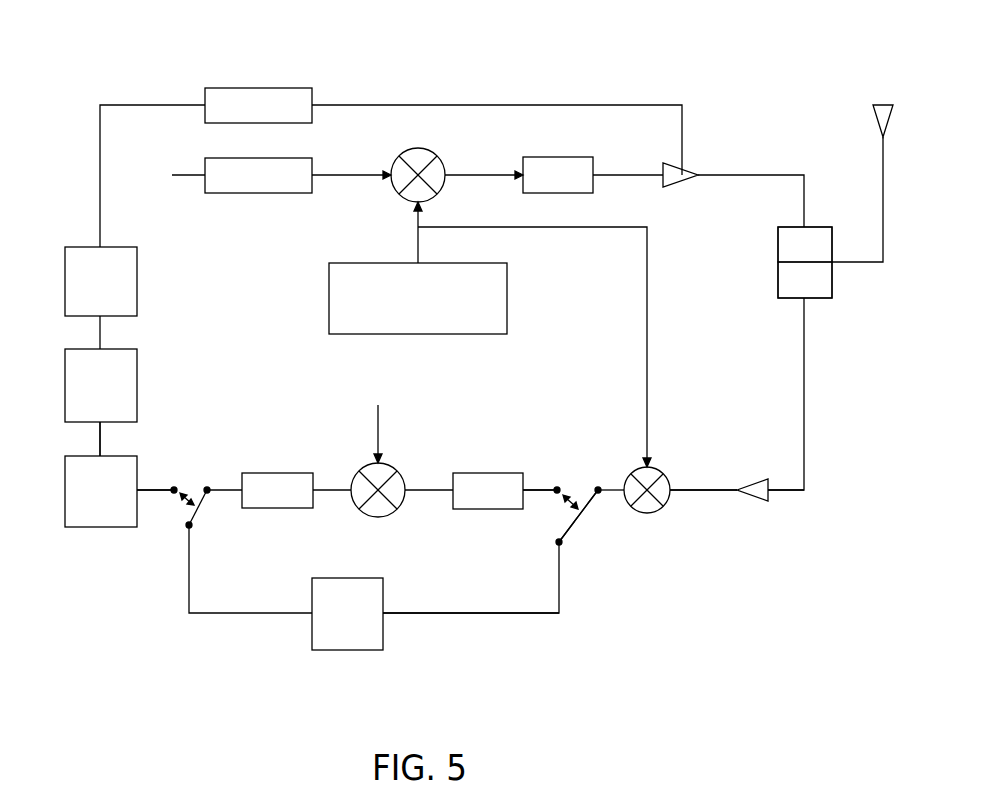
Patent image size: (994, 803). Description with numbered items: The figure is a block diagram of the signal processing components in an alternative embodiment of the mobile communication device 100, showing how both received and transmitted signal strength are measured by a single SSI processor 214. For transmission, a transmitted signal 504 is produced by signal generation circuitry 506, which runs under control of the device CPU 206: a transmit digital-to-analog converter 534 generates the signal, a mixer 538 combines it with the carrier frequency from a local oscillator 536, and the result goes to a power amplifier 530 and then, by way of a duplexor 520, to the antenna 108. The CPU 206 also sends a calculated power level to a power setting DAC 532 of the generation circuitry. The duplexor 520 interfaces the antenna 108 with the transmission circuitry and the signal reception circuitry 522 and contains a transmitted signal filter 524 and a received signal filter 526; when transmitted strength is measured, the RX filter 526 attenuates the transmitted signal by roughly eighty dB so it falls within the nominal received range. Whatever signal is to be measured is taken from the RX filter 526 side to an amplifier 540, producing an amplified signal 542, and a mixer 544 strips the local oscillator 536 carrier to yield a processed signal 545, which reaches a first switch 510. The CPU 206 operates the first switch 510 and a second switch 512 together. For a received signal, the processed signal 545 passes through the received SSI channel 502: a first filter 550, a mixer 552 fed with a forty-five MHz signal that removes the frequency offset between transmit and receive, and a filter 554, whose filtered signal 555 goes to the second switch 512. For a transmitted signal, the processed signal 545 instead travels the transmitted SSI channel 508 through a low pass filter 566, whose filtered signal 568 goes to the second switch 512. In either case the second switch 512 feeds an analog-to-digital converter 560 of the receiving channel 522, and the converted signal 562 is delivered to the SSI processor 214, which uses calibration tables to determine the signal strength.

The mobile communication device 100 is at (846, 522).
The antenna 108 is at (873, 118).
The device CPU 206 is at (137, 298).
The SSI processor 214 is at (172, 388).
The received SSI channel 502 is at (563, 457).
The transmitted signal 504 is at (735, 175).
The signal generation circuitry 506 is at (755, 104).
The transmitted SSI channel 508 is at (538, 629).
The first switch 510 is at (538, 516).
The second switch 512 is at (134, 561).
The duplexor 520 is at (750, 263).
The signal reception circuitry 522 is at (812, 399).
The transmitted (TX) signal filter 524 is at (832, 245).
The received (RX) signal filter 526 is at (832, 280).
The power amplifier 530 is at (675, 165).
The power setting DAC 532 is at (258, 88).
The transmit digital-to-analog converter (TX DAC) 534 is at (258, 158).
The local oscillator 536 is at (335, 262).
The mixer 538 is at (418, 148).
The amplifier 540 is at (750, 500).
The amplified signal 542 is at (700, 490).
The mixer 544 is at (647, 513).
The processed signal 545 is at (612, 490).
The first filter 550 is at (490, 509).
The mixer 552 is at (378, 520).
The filter 554 is at (277, 508).
The filtered signal 555 is at (226, 488).
The analog-to-digital converter (ADC) 560 is at (120, 453).
The converted signal 562 is at (100, 428).
The low pass filter (LPF) 566 is at (312, 628).
The filtered signal 568 is at (189, 595).